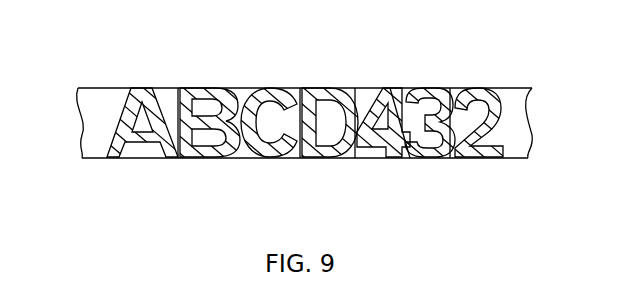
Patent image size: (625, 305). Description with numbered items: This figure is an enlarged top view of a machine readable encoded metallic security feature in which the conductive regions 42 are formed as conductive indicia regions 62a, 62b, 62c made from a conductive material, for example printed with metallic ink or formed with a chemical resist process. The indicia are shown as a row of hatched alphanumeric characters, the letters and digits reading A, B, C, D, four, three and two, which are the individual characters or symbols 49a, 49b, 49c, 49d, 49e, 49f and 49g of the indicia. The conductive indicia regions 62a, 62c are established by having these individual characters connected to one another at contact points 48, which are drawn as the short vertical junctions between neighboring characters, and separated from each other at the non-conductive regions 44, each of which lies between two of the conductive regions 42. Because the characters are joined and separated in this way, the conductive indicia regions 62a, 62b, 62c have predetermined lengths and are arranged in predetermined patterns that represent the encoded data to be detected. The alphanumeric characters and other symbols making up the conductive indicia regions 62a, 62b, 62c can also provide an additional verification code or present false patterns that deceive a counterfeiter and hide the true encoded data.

The conductive region 42 is at (140, 50).
The non-conductive region 44 is at (451, 90).
The contact point 48 is at (178, 158).
The character 49a is at (142, 113).
The character 49b is at (205, 90).
The character 49c is at (278, 90).
The character 49d is at (319, 158).
The character 49e is at (395, 158).
The character 49f is at (429, 158).
The character 2 49g is at (480, 90).
The conductive indicia region 62a is at (118, 158).
The conductive indicia region 62b is at (398, 90).
The conductive indicia region 62c is at (488, 158).